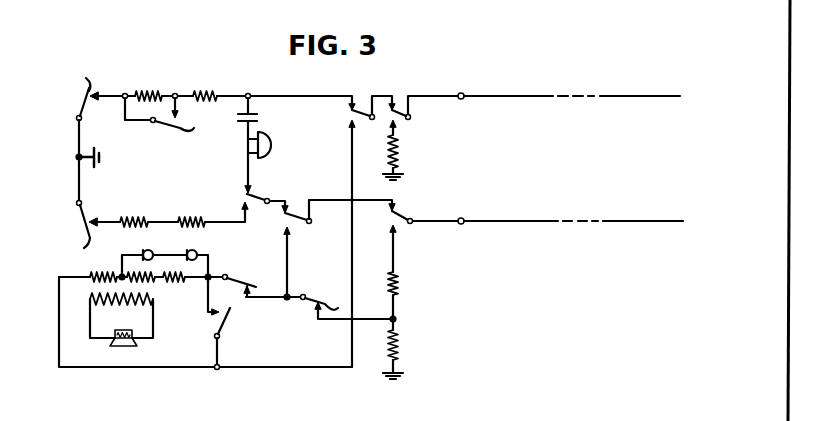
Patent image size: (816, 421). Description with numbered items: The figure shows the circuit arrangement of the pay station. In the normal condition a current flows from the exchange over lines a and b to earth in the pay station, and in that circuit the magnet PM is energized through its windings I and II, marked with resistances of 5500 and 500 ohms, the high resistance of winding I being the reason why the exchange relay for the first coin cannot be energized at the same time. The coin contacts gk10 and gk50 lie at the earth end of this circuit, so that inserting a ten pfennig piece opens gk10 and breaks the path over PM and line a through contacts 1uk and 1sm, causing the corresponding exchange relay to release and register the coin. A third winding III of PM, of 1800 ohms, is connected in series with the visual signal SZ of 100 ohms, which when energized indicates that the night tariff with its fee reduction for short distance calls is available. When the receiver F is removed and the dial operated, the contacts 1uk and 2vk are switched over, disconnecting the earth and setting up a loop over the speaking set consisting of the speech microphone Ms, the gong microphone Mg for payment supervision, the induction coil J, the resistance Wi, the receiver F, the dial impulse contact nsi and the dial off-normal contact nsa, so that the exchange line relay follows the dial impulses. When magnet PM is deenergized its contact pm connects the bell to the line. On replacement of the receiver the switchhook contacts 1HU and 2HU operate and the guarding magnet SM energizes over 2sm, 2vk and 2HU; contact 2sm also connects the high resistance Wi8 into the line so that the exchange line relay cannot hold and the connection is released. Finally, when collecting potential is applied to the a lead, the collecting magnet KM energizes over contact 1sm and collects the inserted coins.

The coin contact for 10 pfennig piece gk10 is at (70, 99).
The coin contact for 50 pfennig piece gk50 is at (68, 225).
The winding I of magnet PM I is at (148, 84).
The magnet PM is at (172, 75).
The winding II of magnet PM II is at (205, 84).
The resistance value of winding PM I 5500 is at (151, 110).
The resistance value of winding PM II 500 is at (206, 110).
The switchhook contact 1HU is at (159, 120).
The contact of magnet PM pm is at (255, 151).
The contact 1vk 1uk is at (347, 118).
The contact of guarding magnet SM 1sm is at (415, 118).
The collecting magnet KM is at (404, 150).
The line a is at (569, 89).
The line b is at (548, 214).
The visual signal SZ is at (134, 210).
The winding III of magnet PM III is at (192, 210).
The resistance value of visual signal SZ 100 is at (140, 232).
The resistance value of winding PM III 1800 is at (196, 232).
The contact 2vk is at (331, 222).
The contact of guarding magnet SM 2sm is at (385, 218).
The high resistance Wi8 is at (408, 277).
The guarding magnet SM is at (407, 354).
The switchhook contact 2HU is at (318, 273).
The dial impulse contact nsi is at (240, 278).
The speech microphone Ms is at (136, 259).
The gong microphone Mg is at (203, 278).
The induction coil J is at (113, 305).
The resistance Wi is at (174, 286).
The receiver F is at (123, 346).
The dial off-normal contact nsa is at (232, 336).